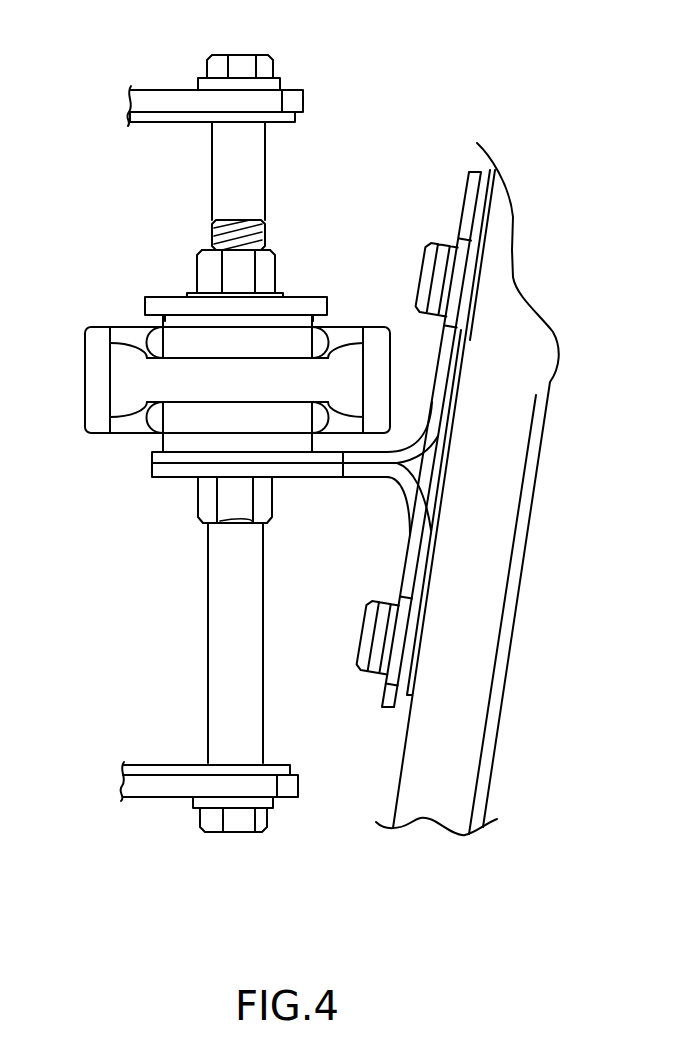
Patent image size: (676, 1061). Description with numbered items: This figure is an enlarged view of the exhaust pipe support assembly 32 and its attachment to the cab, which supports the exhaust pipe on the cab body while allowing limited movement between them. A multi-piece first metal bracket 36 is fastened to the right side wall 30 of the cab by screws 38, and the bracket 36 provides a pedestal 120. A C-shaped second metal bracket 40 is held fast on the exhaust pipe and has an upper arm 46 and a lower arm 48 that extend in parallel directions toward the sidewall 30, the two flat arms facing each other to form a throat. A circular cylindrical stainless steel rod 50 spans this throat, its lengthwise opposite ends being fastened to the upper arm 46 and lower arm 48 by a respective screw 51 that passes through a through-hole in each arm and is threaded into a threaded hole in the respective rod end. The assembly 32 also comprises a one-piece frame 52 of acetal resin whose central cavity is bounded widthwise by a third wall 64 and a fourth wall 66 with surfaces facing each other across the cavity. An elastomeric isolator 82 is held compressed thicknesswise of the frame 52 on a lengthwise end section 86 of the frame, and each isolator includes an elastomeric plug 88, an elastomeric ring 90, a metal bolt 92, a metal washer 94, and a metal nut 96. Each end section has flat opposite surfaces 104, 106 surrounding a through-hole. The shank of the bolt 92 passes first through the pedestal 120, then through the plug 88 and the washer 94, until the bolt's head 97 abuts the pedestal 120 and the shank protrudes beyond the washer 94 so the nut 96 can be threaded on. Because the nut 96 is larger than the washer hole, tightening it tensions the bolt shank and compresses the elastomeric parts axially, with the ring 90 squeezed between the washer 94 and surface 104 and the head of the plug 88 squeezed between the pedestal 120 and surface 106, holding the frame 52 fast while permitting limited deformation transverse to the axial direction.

The right side wall 30 is at (486, 200).
The exhaust pipe support assembly 32 is at (344, 172).
The first metal bracket 36 is at (430, 382).
The screws 38 is at (430, 247).
The second metal bracket 40 is at (305, 90).
The upper arm 46 is at (171, 89).
The lower arm 48 is at (160, 798).
The rod 50 is at (266, 158).
The screw 51 is at (247, 54).
The frame 52 is at (93, 350).
The third wall 64 is at (378, 337).
The fourth wall 66 is at (96, 388).
The elastomeric isolator 82 is at (180, 432).
The end section 86 is at (177, 380).
The elastomeric plug 88 is at (213, 436).
The elastomeric ring 90 is at (236, 347).
The bolt 92 is at (246, 222).
The washer 94 is at (160, 297).
The nut 96 is at (203, 250).
The head 97 is at (197, 510).
The flat surface 104 is at (267, 356).
The flat surface 106 is at (280, 402).
The pedestal 120 is at (208, 448).